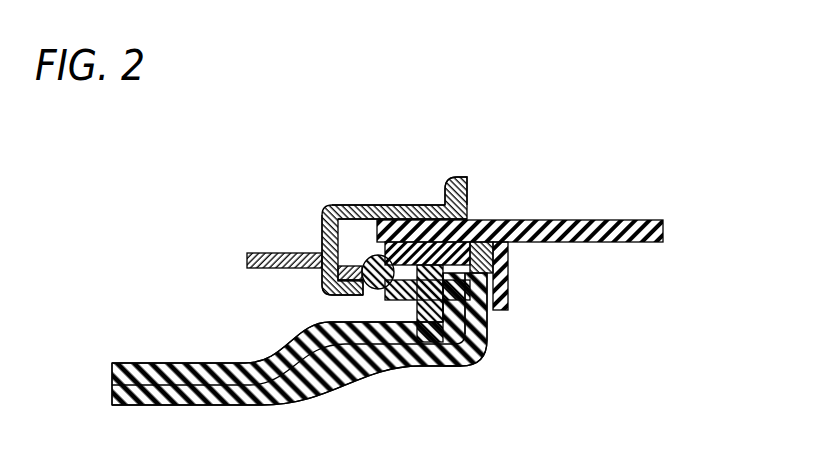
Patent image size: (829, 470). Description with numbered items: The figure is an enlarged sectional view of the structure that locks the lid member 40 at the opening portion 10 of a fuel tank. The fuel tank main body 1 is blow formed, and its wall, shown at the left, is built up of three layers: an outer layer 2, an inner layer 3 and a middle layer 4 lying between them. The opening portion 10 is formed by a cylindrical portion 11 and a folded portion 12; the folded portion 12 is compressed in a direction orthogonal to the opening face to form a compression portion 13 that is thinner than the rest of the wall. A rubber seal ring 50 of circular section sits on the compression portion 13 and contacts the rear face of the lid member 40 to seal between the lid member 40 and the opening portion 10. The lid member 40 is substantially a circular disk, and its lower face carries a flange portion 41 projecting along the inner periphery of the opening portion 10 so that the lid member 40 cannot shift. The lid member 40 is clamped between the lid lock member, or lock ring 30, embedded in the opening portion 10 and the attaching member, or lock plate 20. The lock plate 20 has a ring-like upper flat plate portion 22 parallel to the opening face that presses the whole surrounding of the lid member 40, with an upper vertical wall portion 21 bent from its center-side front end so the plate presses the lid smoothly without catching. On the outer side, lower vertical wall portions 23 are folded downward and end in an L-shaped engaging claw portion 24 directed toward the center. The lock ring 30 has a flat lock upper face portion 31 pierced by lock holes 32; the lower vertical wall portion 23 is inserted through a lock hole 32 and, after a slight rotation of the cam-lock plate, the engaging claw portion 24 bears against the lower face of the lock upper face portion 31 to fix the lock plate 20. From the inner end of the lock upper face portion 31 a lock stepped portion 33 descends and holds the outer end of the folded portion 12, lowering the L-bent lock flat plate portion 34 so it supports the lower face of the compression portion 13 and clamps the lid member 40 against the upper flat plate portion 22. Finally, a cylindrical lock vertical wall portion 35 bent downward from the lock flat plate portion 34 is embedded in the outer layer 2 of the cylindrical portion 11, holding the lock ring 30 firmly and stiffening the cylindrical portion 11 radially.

The fuel tank main body 1 is at (318, 365).
The outer layer 2 is at (150, 362).
The inner layer 3 is at (150, 405).
The middle layer 4 is at (112, 386).
The opening portion 10 is at (520, 245).
The cylindrical portion 11 is at (490, 315).
The folded portion 12 is at (508, 285).
The compression portion 13 is at (443, 370).
The attaching member (lock plate) 20 is at (358, 230).
The upper vertical wall portion 21 is at (455, 177).
The upper flat plate portion 22 is at (400, 205).
The lower vertical wall portion 23 is at (322, 235).
The engaging claw portion 24 is at (352, 300).
The lid lock member (lock ring) 30 is at (291, 252).
The lock upper face portion 31 is at (410, 275).
The lock hole 32 is at (338, 277).
The lock stepped portion 33 is at (378, 293).
The lock flat plate portion 34 is at (402, 312).
The lock vertical wall portion 35 is at (487, 338).
The lid member 40 is at (580, 220).
The flange portion 41 is at (508, 300).
The seal ring 50 is at (465, 219).